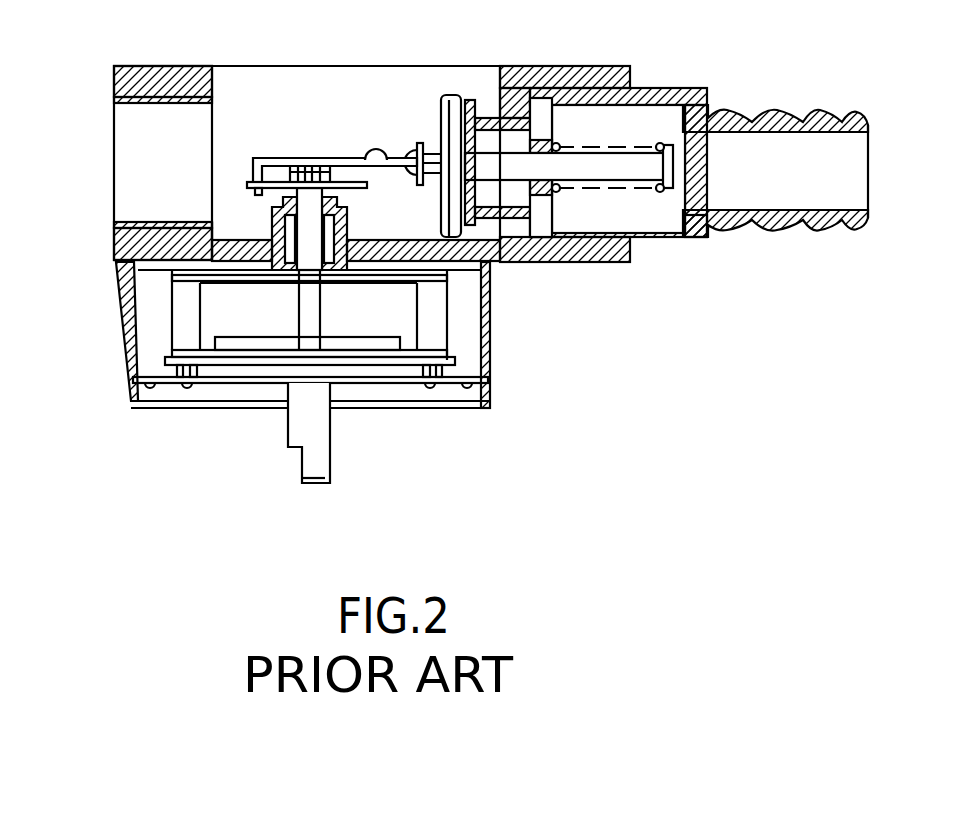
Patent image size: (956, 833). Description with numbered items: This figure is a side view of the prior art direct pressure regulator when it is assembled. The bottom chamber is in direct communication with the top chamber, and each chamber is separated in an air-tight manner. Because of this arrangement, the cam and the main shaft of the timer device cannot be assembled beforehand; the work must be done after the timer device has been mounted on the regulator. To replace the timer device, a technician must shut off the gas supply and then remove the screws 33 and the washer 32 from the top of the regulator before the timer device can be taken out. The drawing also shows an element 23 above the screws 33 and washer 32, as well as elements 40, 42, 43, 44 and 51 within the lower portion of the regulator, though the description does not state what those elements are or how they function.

The ball contact 23 is at (377, 153).
The lever arm 32 is at (322, 173).
The contact plate 33 is at (283, 166).
The diaphragm disc 40 is at (233, 343).
The housing bottom wall 42 is at (290, 261).
The bearing hub 43 is at (277, 230).
The bearing hub bushing 44 is at (190, 220).
The diaphragm plate and stem 51 is at (353, 383).